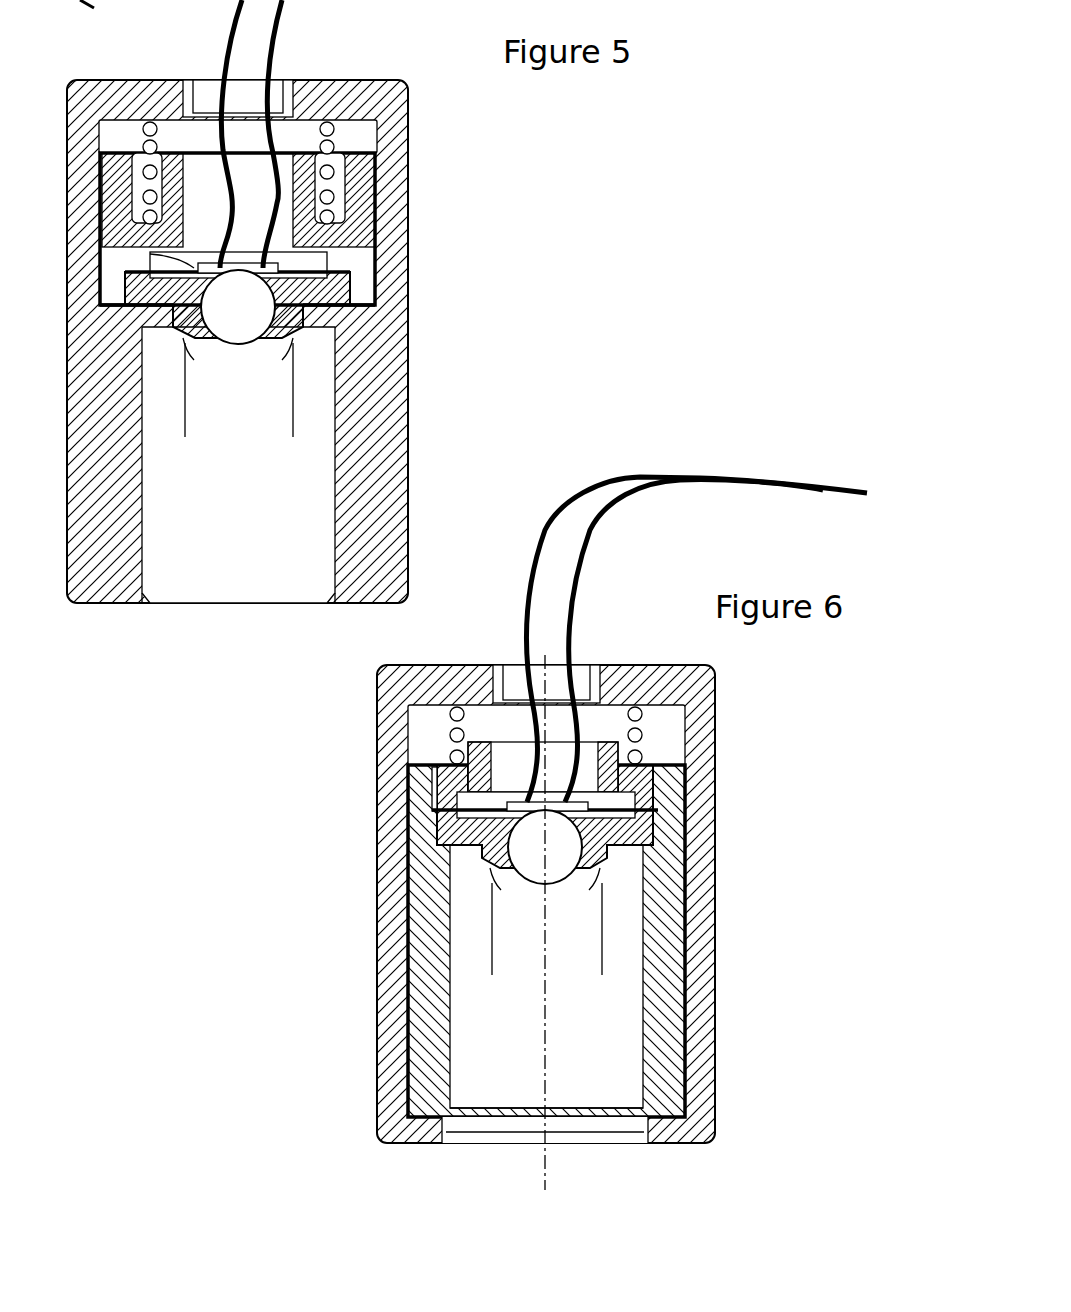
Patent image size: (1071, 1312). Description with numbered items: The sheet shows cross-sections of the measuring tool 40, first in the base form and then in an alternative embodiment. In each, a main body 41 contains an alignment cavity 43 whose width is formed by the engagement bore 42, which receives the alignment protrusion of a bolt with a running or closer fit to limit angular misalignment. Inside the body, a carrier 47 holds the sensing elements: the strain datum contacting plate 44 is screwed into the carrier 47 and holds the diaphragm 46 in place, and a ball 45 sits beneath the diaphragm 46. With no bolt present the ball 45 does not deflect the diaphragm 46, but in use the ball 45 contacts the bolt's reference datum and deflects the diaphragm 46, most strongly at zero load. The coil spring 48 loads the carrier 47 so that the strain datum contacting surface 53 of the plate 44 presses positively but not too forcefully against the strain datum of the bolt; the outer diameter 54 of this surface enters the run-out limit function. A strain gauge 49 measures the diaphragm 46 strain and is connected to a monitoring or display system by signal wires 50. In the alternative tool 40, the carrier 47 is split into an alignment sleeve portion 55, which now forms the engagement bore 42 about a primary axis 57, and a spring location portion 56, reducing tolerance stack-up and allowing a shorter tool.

In FIG. 6, the measuring tool 40 is at (309, 922).
In FIG. 5, the main body 41 is at (390, 385).
In FIG. 6, the main body 41 is at (700, 1030).
In FIG. 5, the engagement bore 42 is at (143, 540).
In FIG. 6, the engagement bore 42 is at (450, 1085).
In FIG. 5, the alignment cavity 43 is at (272, 542).
In FIG. 6, the alignment cavity 43 is at (613, 1082).
In FIG. 5, the strain datum contacting plate 44 is at (188, 333).
In FIG. 6, the strain datum contacting plate 44 is at (497, 870).
In FIG. 5, the ball 45 is at (316, 291).
In FIG. 6, the ball 45 is at (620, 834).
In FIG. 5, the diaphragm 46 is at (150, 263).
In FIG. 6, the diaphragm 46 is at (457, 800).
In FIG. 5, the carrier 47 is at (367, 182).
In FIG. 5, the coil spring 48 is at (285, 211).
In FIG. 6, the coil spring 48 is at (642, 735).
In FIG. 5, the strain gauge 49 is at (190, 257).
In FIG. 6, the strain gauge 49 is at (433, 777).
In FIG. 6, the signal wires 50 is at (775, 478).
In FIG. 5, the strain datum contacting surface 53 is at (290, 338).
In FIG. 6, the strain datum contacting surface 53 is at (596, 876).
In FIG. 5, the outer diameter 54 is at (292, 428).
In FIG. 6, the outer diameter 54 is at (601, 968).
In FIG. 6, the alignment sleeve portion 55 is at (673, 943).
In FIG. 6, the spring location portion 56 is at (625, 772).
In FIG. 6, the primary axis 57 is at (547, 1155).